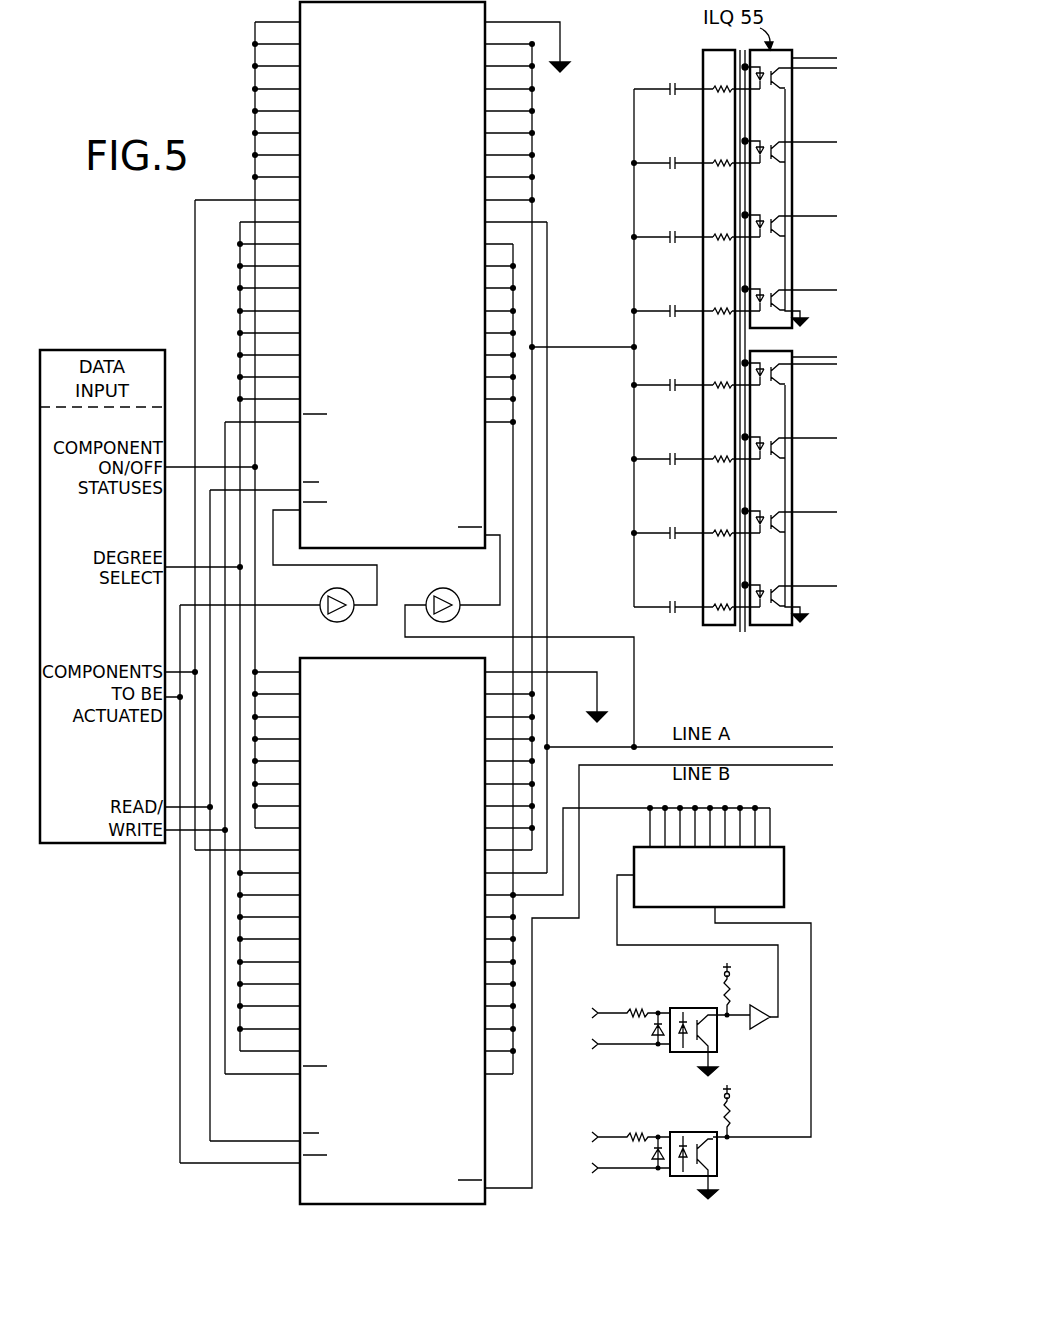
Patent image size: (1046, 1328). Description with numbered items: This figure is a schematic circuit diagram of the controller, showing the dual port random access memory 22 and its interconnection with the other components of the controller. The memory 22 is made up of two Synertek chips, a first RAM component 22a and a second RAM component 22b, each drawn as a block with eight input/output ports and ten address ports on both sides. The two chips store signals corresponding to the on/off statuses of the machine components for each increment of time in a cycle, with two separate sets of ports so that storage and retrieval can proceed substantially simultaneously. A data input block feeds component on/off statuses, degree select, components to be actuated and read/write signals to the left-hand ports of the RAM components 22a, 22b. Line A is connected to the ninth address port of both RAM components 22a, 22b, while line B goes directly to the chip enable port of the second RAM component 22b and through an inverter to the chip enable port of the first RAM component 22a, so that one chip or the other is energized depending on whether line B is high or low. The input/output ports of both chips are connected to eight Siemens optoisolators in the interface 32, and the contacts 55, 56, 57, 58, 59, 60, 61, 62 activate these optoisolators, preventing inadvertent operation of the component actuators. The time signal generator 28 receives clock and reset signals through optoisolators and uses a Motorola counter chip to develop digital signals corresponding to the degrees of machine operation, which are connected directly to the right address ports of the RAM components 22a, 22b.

The dual port random access memory 22 is at (245, 92).
The RAM 1 22a is at (490, 12).
The RAM 2 22b is at (300, 1193).
The time signal generator 28 is at (783, 1138).
The interface 32 is at (727, 632).
The contact 55 is at (735, 78).
The contact 56 is at (735, 152).
The contact 57 is at (735, 226).
The contact 58 is at (735, 300).
The contact 59 is at (735, 374).
The contact 60 is at (735, 448).
The contact 61 is at (735, 522).
The contact 62 is at (735, 596).